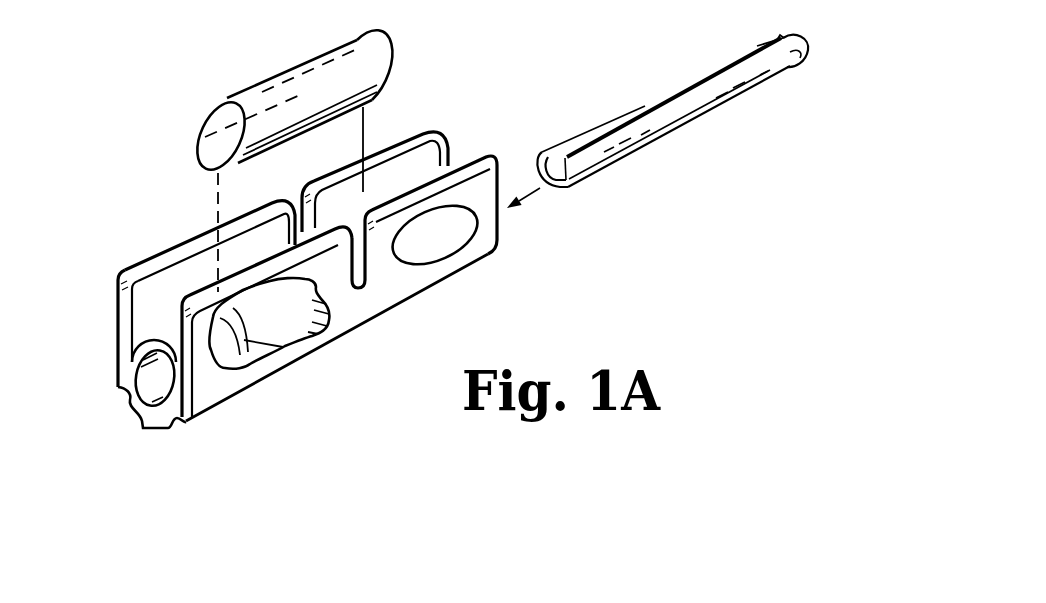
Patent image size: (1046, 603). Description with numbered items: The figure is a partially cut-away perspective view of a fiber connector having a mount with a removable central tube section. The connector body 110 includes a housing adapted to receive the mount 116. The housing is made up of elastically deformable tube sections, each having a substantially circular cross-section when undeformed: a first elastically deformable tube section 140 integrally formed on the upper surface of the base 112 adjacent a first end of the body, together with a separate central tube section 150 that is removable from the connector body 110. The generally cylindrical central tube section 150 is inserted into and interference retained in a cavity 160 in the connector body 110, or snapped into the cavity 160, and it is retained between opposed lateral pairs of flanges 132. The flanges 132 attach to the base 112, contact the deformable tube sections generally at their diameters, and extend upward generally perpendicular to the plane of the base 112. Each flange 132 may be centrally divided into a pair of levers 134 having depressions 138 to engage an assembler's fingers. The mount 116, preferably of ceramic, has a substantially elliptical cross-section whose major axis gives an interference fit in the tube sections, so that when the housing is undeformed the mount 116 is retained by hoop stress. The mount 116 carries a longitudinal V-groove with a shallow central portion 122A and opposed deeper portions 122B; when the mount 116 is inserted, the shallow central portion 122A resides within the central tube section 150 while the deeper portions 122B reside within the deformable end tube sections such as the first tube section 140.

The connector body 110 is at (390, 308).
The base 112 is at (147, 417).
The mount 116 is at (693, 97).
The shallow central portion 122A is at (682, 91).
The deeper portions 122B is at (762, 44).
The flanges 132 is at (120, 378).
The levers 134 is at (210, 293).
The depressions 138 is at (437, 242).
The first elastically deformable tube section 140 is at (170, 340).
The central tube section 150 is at (298, 82).
The cavity 160 is at (272, 307).